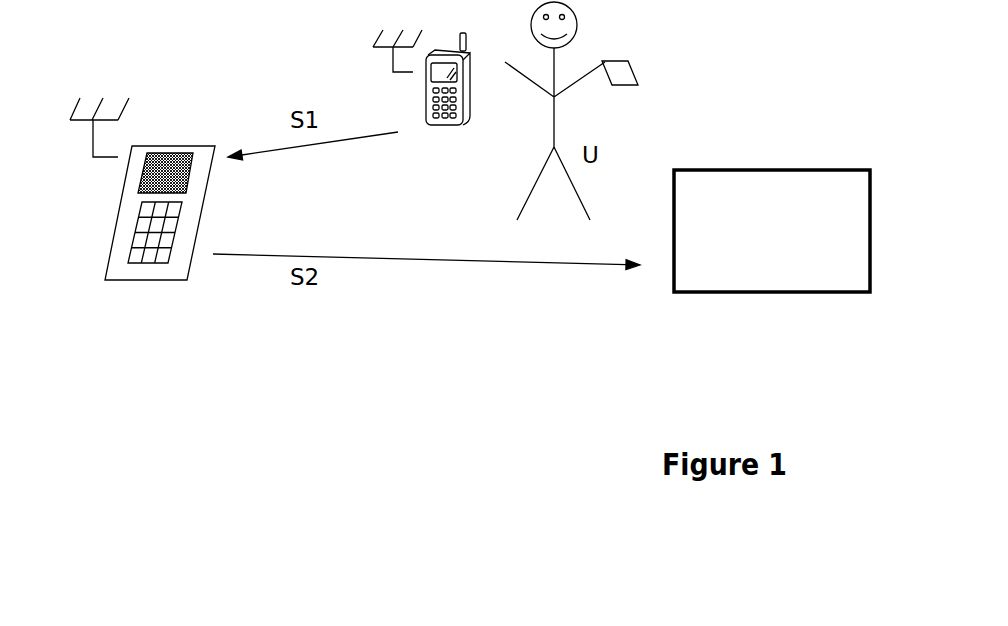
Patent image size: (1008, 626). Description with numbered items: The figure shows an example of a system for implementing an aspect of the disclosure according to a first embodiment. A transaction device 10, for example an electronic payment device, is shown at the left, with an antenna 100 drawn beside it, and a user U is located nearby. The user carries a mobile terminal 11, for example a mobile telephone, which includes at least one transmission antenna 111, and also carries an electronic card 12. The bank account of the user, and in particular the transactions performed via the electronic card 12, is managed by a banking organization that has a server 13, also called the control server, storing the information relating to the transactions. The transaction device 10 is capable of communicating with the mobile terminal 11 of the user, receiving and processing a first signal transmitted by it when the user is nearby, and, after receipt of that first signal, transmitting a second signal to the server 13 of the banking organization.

The antenna of the payment terminal 100 is at (112, 97).
The transaction device 10 is at (165, 137).
The transmission antenna 111 is at (405, 27).
The mobile terminal 11 is at (445, 48).
The electronic card 12 is at (638, 72).
The server 13 is at (765, 292).